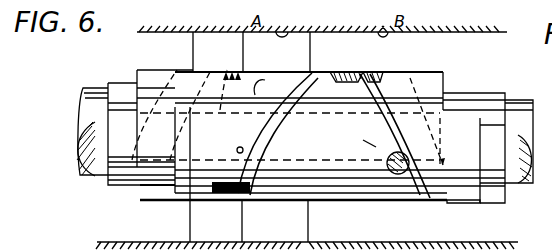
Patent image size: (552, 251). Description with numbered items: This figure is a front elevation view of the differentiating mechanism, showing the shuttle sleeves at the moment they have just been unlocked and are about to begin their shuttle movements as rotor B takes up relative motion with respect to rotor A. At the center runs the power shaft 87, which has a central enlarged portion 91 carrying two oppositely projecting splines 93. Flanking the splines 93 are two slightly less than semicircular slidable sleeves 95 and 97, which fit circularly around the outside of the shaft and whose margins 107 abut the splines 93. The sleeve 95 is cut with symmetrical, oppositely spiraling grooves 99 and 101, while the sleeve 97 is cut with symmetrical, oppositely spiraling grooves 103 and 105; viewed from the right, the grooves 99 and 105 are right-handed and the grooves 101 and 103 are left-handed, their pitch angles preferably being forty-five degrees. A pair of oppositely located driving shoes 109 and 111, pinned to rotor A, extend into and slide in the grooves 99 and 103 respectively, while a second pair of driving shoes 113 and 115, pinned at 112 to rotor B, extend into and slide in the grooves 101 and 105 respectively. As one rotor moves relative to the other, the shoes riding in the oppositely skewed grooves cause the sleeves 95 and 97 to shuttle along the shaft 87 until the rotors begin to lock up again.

The power shaft 87 is at (520, 184).
The central enlarged portion 91 is at (120, 84).
The splines 93 is at (455, 100).
The slidable sleeve 95 is at (418, 75).
The slidable sleeve 97 is at (345, 200).
The spiraling groove 99 is at (267, 84).
The spiraling groove 101 is at (331, 76).
The spiraling groove 103 is at (237, 151).
The spiraling groove 105 is at (380, 131).
The margins 107 is at (165, 95).
The driving shoe 109 is at (232, 71).
The driving shoe 111 is at (214, 197).
The pin 112 is at (387, 163).
The driving shoe 113 is at (414, 127).
The driving shoe 115 is at (382, 148).